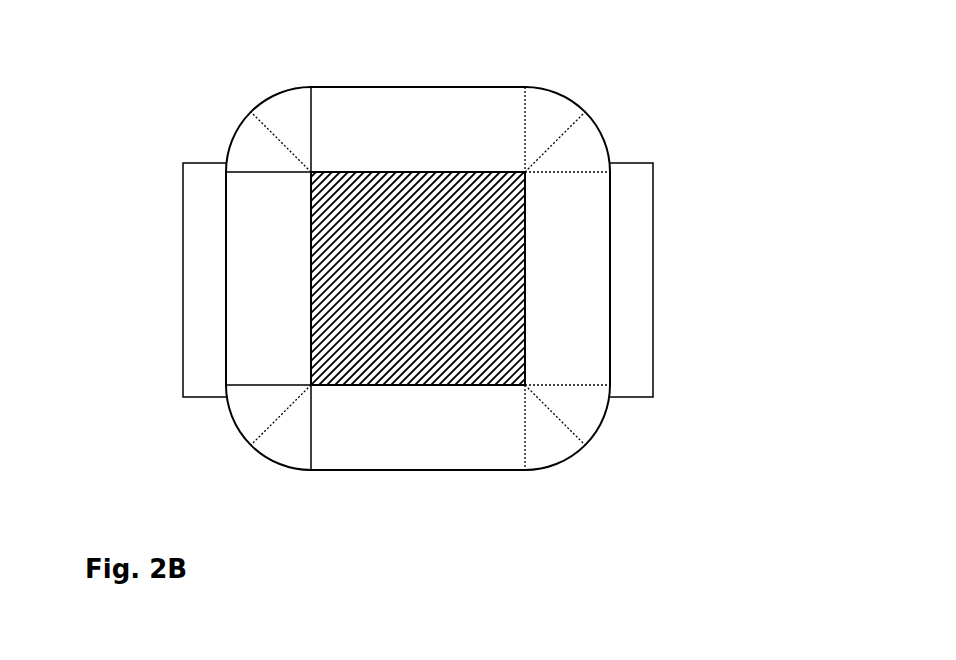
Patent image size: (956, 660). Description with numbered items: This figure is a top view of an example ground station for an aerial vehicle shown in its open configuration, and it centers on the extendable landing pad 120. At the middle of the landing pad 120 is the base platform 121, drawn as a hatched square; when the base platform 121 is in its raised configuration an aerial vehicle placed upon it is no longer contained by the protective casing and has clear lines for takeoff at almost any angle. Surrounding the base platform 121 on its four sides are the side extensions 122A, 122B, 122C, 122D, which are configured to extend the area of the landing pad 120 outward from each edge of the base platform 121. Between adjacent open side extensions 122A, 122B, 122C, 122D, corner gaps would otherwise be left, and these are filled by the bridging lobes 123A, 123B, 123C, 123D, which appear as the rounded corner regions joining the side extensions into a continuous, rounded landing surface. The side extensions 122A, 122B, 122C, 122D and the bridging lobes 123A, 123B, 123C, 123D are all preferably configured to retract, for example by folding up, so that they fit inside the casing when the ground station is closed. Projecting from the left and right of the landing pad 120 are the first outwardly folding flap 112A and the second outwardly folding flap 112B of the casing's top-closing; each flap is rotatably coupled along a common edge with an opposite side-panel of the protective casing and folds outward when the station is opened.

The extendable landing pad 120 is at (662, 512).
The base platform 121 is at (495, 288).
The side extension 122A is at (422, 97).
The side extension 122B is at (580, 340).
The side extension 122C is at (410, 453).
The side extension 122D is at (257, 324).
The bridging lobe 123A is at (592, 128).
The bridging lobe 123B is at (535, 453).
The bridging lobe 123C is at (272, 445).
The bridging lobe 123D is at (240, 128).
The first outwardly folding flap 112A is at (193, 209).
The second outwardly folding flap 112B is at (635, 201).